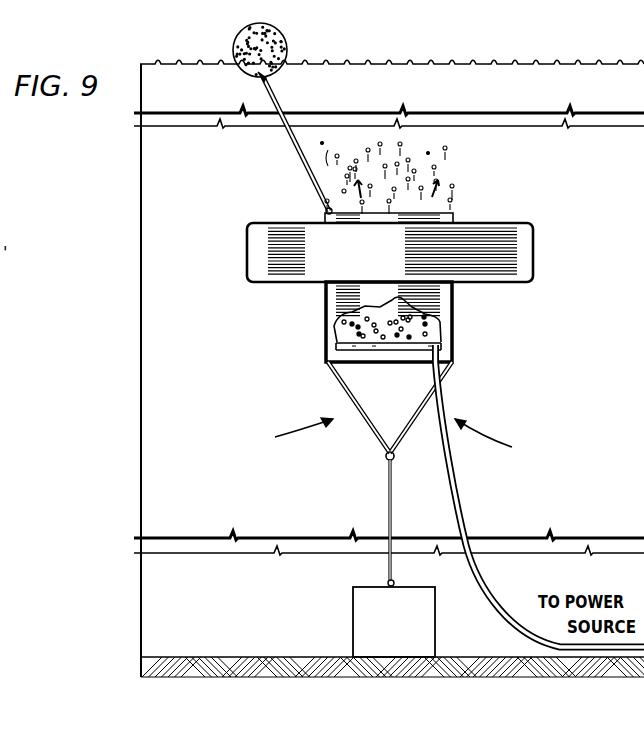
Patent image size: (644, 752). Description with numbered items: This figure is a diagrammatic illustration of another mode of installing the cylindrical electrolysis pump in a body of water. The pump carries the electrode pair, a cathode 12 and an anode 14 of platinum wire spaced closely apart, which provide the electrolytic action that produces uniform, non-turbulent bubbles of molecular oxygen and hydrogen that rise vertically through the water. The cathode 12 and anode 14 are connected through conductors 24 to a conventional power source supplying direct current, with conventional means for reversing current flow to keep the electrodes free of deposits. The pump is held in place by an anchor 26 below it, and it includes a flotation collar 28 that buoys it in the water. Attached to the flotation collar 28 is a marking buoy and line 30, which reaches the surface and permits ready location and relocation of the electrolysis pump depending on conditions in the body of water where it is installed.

The cathode 12 is at (381, 348).
The anode 14 is at (422, 350).
The conductors 24 is at (540, 496).
The anchor 26 is at (400, 623).
The flotation collar 28 is at (534, 240).
The marking buoy and line 30 is at (287, 42).